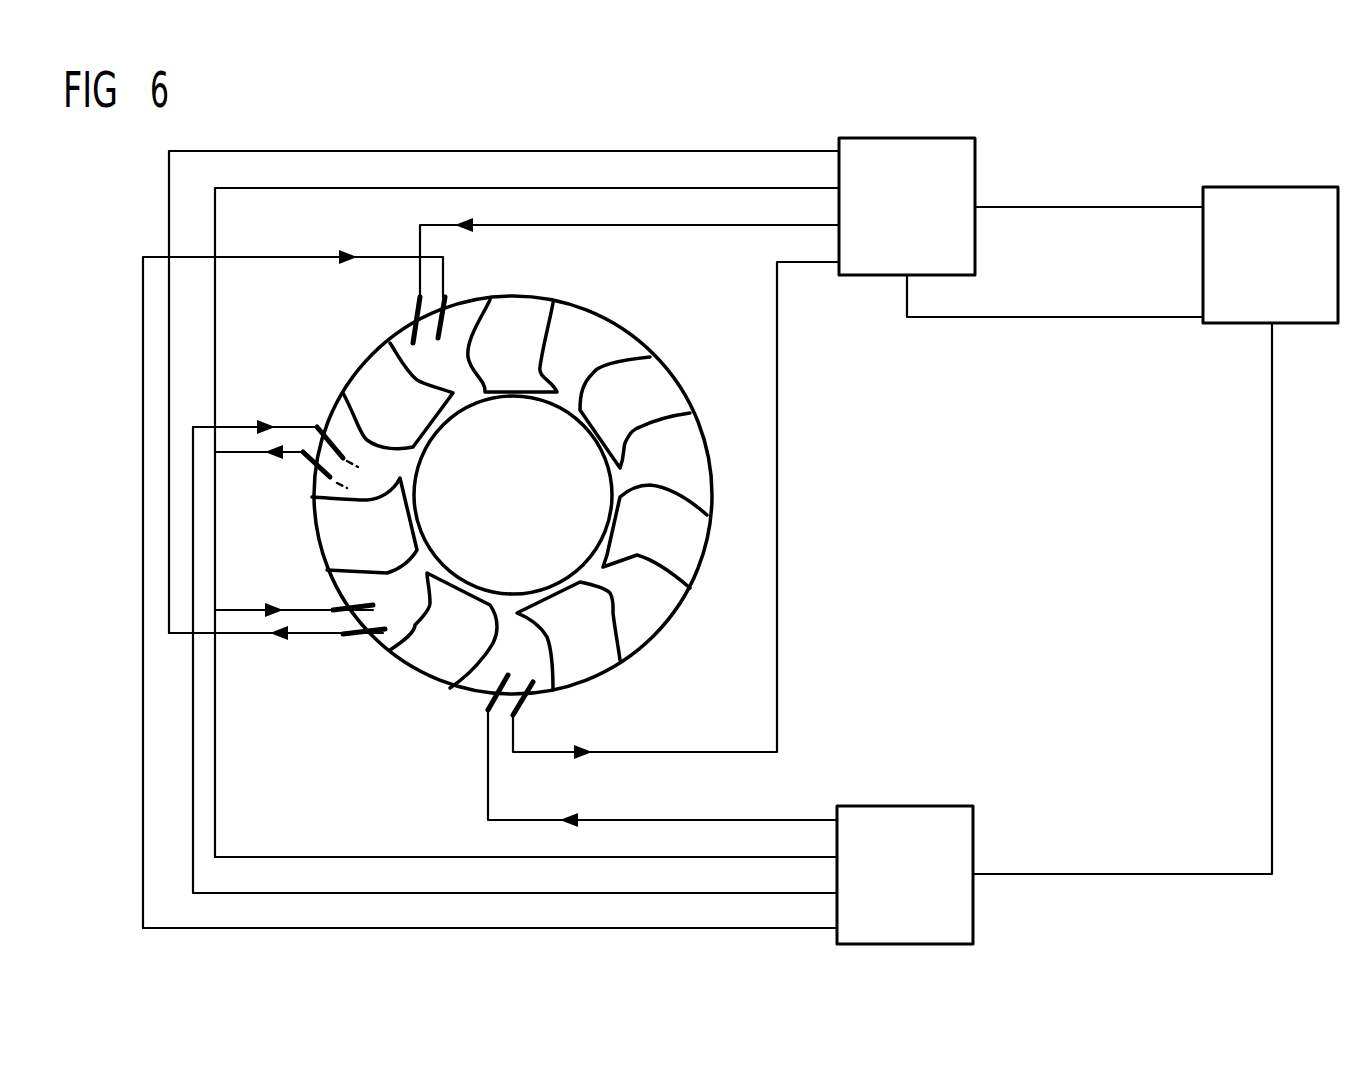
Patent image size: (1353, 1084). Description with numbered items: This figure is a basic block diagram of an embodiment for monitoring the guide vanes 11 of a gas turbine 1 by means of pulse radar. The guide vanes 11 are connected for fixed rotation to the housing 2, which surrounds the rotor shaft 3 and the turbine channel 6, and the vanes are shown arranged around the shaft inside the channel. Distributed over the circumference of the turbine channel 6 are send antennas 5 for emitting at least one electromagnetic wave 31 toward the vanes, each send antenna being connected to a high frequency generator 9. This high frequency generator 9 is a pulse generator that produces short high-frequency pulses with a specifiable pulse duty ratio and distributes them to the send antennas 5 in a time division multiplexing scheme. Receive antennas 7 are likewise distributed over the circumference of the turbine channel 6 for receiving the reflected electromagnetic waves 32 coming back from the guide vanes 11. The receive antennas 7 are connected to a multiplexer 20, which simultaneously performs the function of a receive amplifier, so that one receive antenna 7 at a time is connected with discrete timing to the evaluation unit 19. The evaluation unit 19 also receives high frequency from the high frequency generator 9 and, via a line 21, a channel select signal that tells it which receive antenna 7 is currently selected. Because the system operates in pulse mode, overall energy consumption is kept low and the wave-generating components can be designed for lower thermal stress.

The gas turbine 1 is at (612, 299).
The housing 2 is at (705, 438).
The rotor shaft 3 is at (519, 514).
The send antennas 5 is at (450, 299).
The turbine channel 6 is at (655, 598).
The receive antennas 7 is at (413, 310).
The high frequency generator 9 is at (927, 806).
The guide vanes 11 is at (505, 325).
The evaluation unit 19 is at (1242, 325).
The multiplexer 20 is at (977, 160).
The line 21 is at (1082, 319).
The electromagnetic wave 31 is at (370, 463).
The reflected electromagnetic waves 32 is at (380, 497).